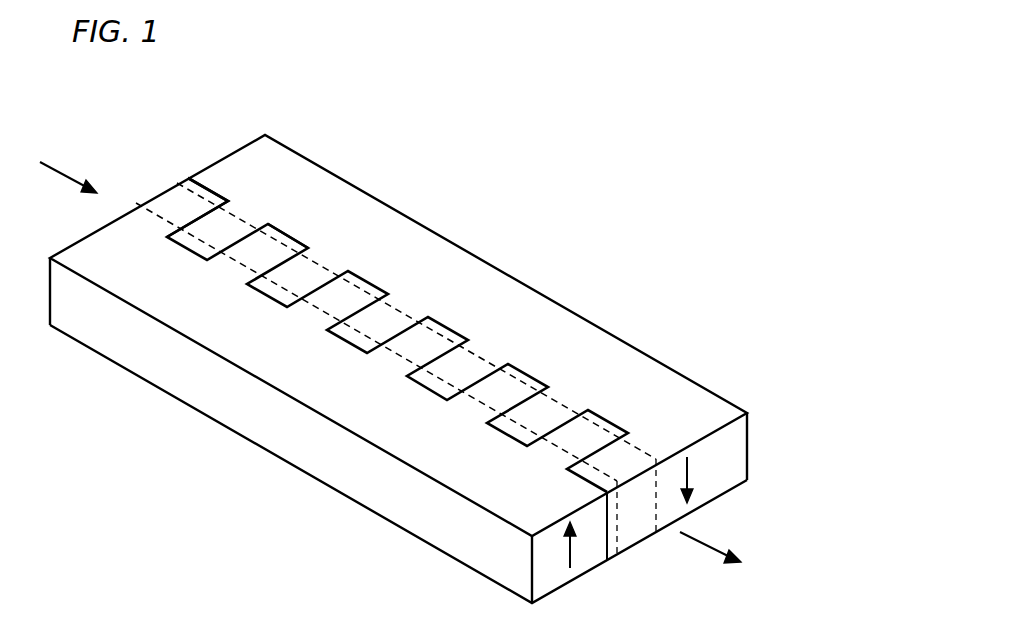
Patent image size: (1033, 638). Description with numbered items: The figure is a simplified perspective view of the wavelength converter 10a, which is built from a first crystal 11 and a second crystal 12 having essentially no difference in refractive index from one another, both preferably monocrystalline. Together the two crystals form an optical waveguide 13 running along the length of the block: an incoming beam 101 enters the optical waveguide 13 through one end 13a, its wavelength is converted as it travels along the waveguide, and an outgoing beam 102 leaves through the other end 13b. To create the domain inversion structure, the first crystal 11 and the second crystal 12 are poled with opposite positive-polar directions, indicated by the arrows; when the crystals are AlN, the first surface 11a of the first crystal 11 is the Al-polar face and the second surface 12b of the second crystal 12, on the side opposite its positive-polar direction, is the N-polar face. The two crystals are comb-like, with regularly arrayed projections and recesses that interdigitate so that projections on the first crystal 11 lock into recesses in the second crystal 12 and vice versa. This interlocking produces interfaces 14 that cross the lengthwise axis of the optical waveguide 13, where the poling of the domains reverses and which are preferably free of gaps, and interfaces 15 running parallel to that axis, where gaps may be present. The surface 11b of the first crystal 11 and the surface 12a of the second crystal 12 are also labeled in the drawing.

The wavelength converter 10a is at (583, 180).
The first crystal 11 is at (357, 540).
The first surface of first crystal 11a is at (527, 497).
The lower surface of substrate 11b is at (483, 575).
The second crystal 12 is at (832, 400).
The lower portion of end face 12a is at (725, 495).
The second surface of second crystal 12b is at (708, 410).
The optical waveguide 13 is at (243, 215).
The one end of optical waveguide 13a is at (160, 195).
The other end of optical waveguide 13b is at (640, 508).
The interfaces crossing the lengthwise axis 14 is at (236, 222).
The interfaces parallel to the lengthwise axis 15 is at (290, 233).
The incoming beam 101 is at (63, 184).
The outgoing beam 102 is at (706, 554).